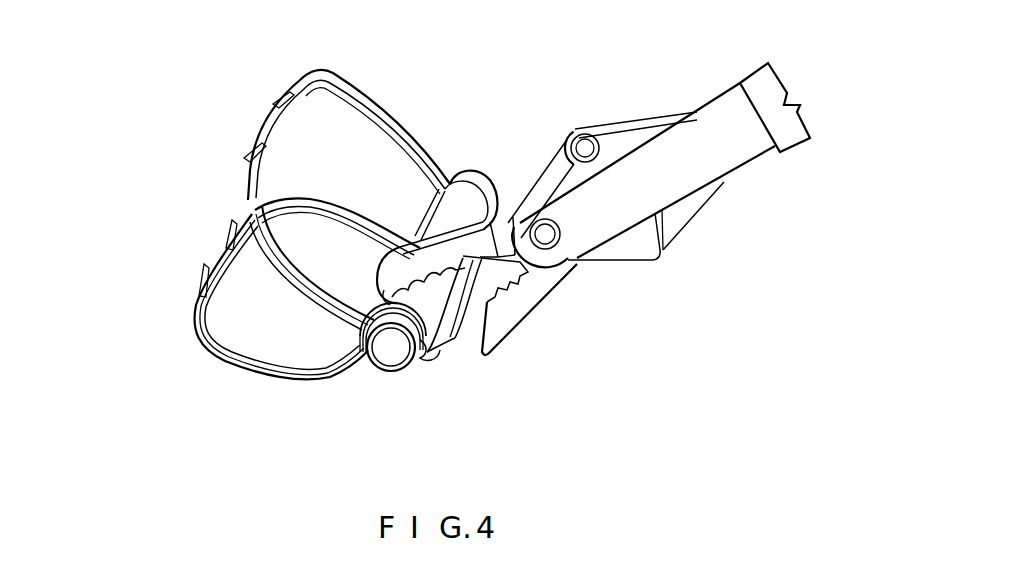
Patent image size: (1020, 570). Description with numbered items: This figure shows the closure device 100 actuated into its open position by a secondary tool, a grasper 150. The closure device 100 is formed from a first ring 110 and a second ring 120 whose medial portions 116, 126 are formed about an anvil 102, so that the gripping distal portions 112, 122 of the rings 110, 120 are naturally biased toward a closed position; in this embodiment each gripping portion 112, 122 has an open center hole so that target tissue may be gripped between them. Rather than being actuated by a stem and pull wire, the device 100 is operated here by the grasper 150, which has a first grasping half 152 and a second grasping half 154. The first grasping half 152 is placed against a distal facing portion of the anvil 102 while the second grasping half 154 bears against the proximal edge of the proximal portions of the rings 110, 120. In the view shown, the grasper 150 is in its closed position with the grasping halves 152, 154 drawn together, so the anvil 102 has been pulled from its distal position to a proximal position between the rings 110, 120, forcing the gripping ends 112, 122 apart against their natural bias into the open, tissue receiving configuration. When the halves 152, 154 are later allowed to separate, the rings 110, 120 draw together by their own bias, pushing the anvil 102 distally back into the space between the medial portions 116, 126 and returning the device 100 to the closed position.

The closure device 100 is at (178, 85).
The anvil 102 is at (397, 360).
The first ring 110 is at (247, 362).
The gripping distal portion 112 is at (212, 262).
The medial portion 116 is at (378, 372).
The second ring 120 is at (388, 104).
The gripping distal portion 122 is at (267, 112).
The medial portion 126 is at (362, 328).
The grasper 150 is at (628, 74).
The first grasping half 152 is at (517, 232).
The second grasping half 154 is at (508, 333).